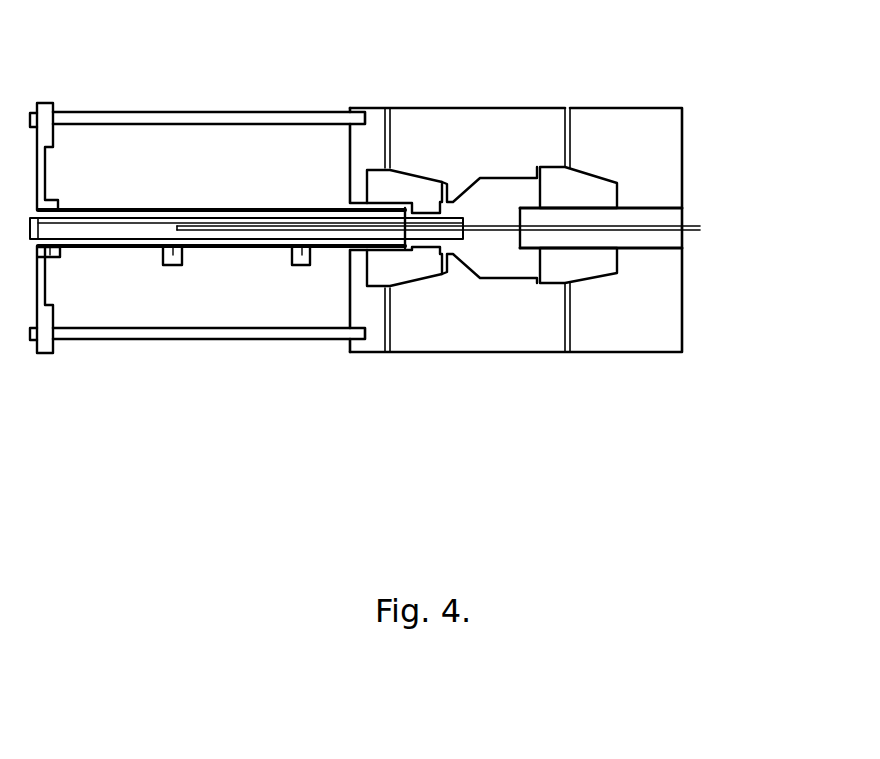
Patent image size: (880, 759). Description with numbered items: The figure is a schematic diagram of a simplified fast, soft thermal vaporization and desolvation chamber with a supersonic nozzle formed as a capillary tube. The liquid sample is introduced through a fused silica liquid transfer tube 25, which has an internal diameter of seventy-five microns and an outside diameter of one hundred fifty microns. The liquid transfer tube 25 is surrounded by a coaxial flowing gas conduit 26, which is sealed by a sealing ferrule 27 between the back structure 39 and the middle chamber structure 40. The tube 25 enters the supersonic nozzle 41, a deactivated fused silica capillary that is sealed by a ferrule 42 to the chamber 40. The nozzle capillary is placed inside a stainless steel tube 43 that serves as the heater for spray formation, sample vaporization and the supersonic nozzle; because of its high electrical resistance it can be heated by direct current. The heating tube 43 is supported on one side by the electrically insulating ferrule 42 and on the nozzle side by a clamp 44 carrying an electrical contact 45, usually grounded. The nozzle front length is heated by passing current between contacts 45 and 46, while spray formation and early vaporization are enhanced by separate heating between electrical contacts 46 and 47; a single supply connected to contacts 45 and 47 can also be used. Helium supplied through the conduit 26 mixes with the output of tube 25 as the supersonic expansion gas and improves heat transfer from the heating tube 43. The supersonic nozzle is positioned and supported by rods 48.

The fused silica tube 25 is at (672, 225).
The coaxial flowing gas conduit 26 is at (650, 218).
The sealing ferrule 27 is at (580, 192).
The back structure 39 is at (660, 312).
The middle chamber structure 40 is at (522, 133).
The supersonic nozzle 41 is at (123, 218).
The ferrule 42 is at (418, 200).
The stainless steel tube 43 is at (205, 208).
The clamp 44 is at (47, 120).
The electrical contact 45 is at (50, 257).
The electrical contact 46 is at (173, 255).
The electrical contact 47 is at (302, 255).
The rods 48 is at (283, 112).